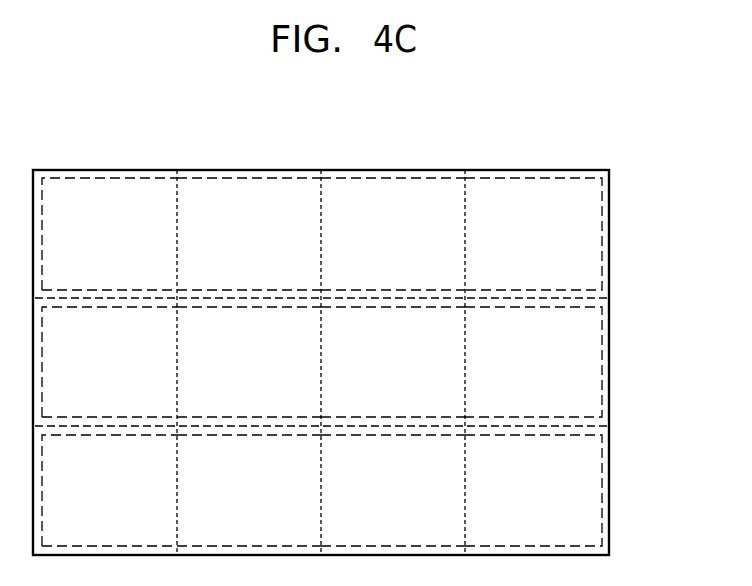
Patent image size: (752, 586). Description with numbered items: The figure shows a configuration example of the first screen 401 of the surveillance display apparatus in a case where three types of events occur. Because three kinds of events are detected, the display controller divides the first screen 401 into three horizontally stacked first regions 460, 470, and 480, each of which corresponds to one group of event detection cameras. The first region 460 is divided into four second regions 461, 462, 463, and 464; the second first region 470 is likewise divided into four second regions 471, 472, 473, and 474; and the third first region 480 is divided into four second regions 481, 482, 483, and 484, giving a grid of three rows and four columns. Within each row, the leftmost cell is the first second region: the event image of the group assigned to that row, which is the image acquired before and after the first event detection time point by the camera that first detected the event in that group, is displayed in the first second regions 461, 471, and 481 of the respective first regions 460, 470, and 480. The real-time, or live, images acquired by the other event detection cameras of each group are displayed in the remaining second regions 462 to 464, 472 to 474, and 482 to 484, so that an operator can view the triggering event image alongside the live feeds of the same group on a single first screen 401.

The first screen 401 is at (636, 143).
The first region 460 is at (368, 234).
The first second region 461 is at (109, 234).
The second region 462 is at (249, 234).
The second region 463 is at (393, 234).
The second region 464 is at (533, 234).
The second first region 470 is at (368, 362).
The first second region 471 is at (109, 362).
The second region 472 is at (249, 362).
The second region 473 is at (393, 362).
The second region 474 is at (533, 362).
The third first region 480 is at (368, 490).
The first second region 481 is at (109, 490).
The second region 482 is at (249, 490).
The second region 483 is at (393, 490).
The second region 484 is at (533, 490).